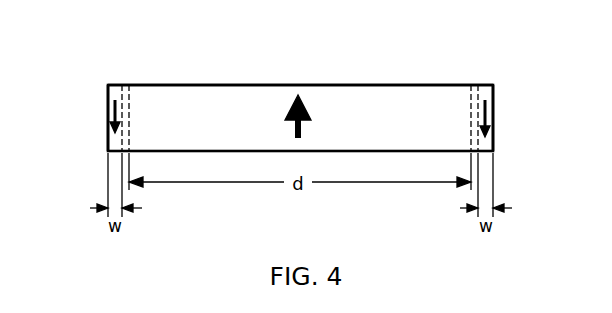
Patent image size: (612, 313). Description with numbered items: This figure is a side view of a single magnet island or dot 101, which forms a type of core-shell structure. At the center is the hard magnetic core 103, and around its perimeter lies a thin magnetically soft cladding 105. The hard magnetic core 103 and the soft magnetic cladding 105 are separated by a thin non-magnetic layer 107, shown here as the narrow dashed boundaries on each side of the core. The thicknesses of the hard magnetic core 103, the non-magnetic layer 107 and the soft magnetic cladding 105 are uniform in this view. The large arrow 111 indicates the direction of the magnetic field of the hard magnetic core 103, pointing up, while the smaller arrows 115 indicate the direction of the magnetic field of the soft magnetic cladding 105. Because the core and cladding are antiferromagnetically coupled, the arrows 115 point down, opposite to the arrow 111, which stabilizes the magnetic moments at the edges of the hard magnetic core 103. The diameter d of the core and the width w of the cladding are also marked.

The magnet dot 101 is at (293, 65).
The hard magnetic core 103 is at (331, 92).
The soft magnetic cladding 105 is at (108, 137).
The non-magnetic layer 107 is at (123, 85).
The arrow 111 is at (305, 122).
The arrows 115 is at (109, 113).